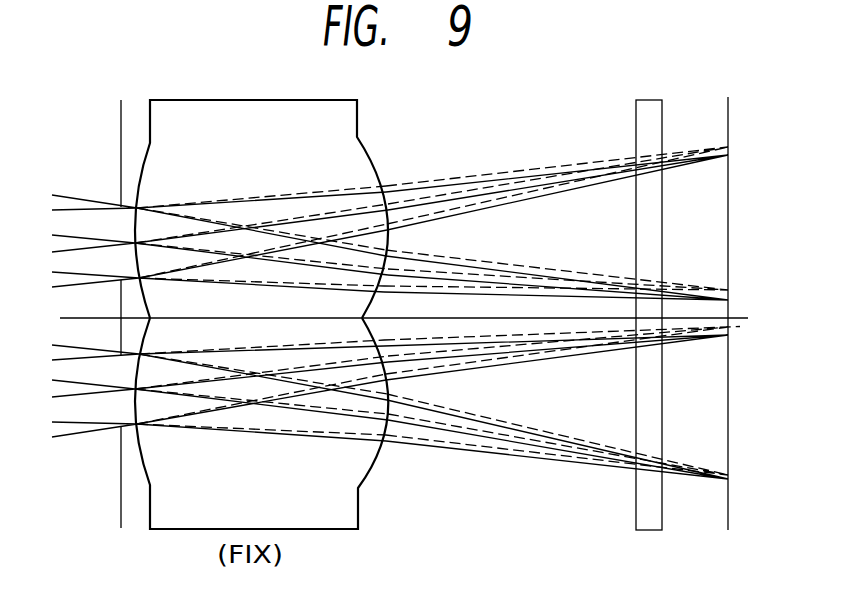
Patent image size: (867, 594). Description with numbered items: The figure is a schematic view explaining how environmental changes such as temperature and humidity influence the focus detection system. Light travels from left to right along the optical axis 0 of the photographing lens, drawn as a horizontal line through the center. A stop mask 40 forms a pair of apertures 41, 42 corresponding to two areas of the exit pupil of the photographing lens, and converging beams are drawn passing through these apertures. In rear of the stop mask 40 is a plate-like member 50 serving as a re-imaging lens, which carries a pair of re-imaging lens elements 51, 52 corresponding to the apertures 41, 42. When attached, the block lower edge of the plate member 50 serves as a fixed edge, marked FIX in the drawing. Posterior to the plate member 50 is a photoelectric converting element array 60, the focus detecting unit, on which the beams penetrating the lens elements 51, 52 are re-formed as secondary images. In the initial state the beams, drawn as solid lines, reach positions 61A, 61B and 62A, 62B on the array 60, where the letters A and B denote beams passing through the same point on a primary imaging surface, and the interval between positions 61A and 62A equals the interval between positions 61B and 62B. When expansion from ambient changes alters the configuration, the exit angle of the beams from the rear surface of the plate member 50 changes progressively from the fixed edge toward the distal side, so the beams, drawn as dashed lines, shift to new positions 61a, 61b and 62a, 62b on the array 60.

The optical axis 0 is at (394, 317).
The stop mask 40 is at (120, 297).
The aperture 41 is at (220, 239).
The aperture 42 is at (220, 390).
The plate-like member 50 is at (266, 296).
The re-imaging lens element 51 is at (261, 209).
The re-imaging lens element 52 is at (266, 423).
The photoelectric converting element array 60 is at (689, 297).
The shifted light beam position 61a is at (728, 147).
The initial light beam position 61A is at (728, 157).
The shifted light beam position 61b is at (728, 290).
The initial light beam position 61B is at (728, 300).
The shifted light beam position 62a is at (728, 327).
The initial light beam position 62A is at (728, 335).
The shifted light beam position 62b is at (728, 477).
The initial light beam position 62B is at (728, 479).